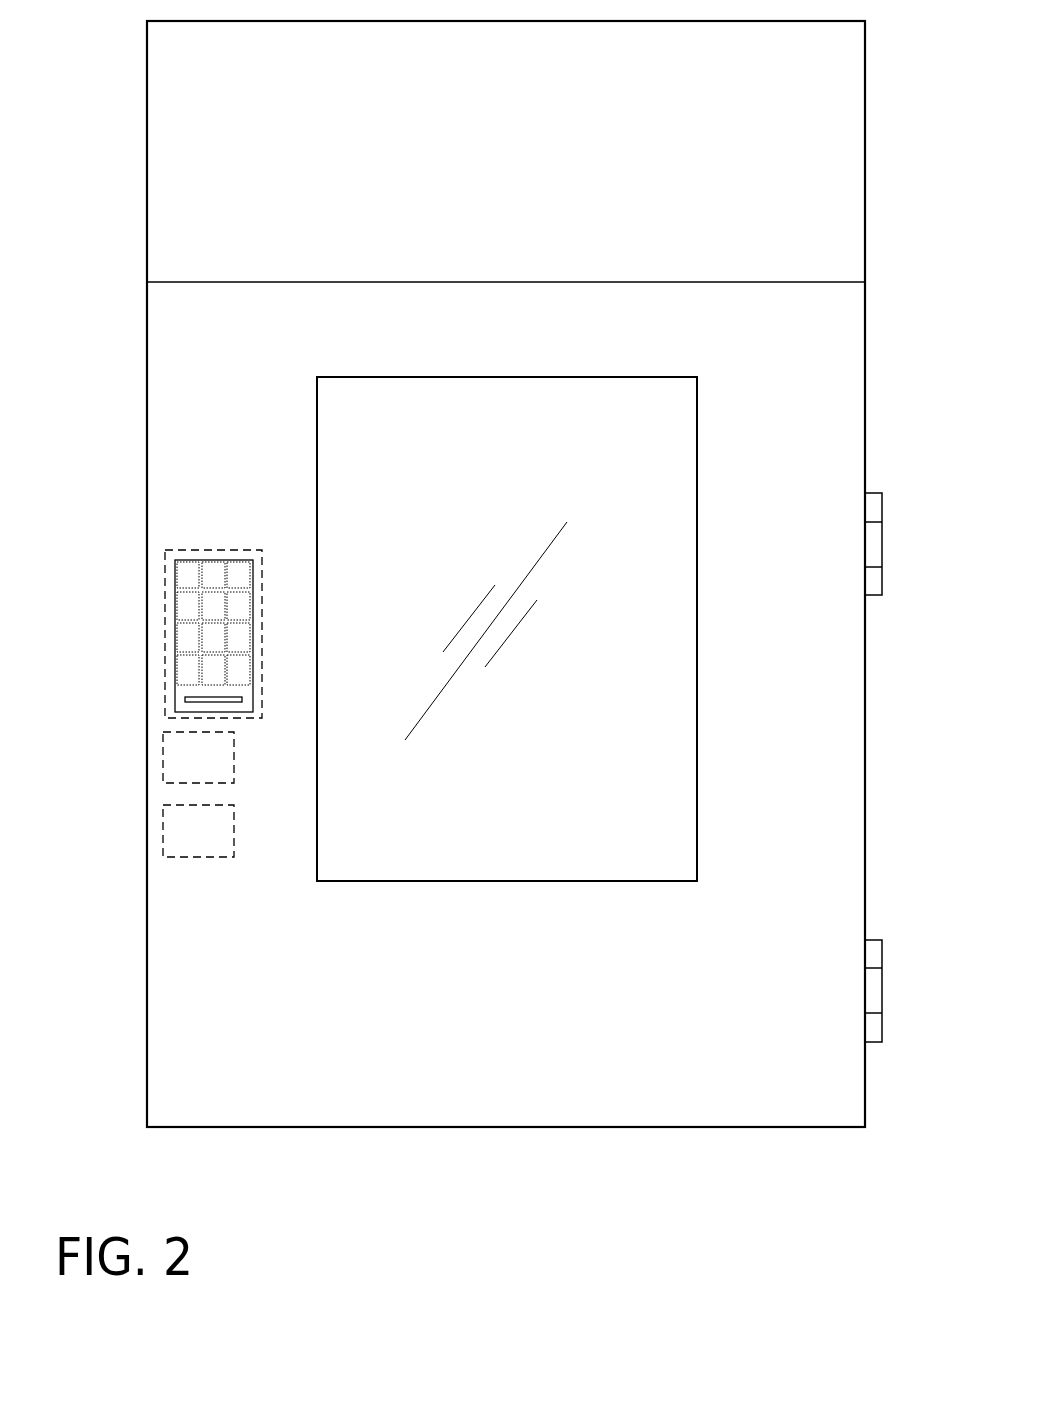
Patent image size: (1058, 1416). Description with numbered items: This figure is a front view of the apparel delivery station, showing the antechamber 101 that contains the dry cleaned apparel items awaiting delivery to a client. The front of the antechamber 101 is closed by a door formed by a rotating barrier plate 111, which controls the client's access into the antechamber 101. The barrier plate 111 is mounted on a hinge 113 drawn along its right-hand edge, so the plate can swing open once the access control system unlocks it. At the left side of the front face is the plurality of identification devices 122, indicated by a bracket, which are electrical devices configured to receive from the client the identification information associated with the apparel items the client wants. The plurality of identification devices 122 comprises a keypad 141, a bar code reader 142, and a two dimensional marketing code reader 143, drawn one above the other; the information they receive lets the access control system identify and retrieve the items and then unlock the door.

The antechamber 101 is at (875, 180).
The barrier plate 111 is at (787, 835).
The hinge 113 is at (875, 990).
The plurality of identification devices 122 is at (140, 535).
The keypad 141 is at (218, 615).
The bar code reader 142 is at (215, 772).
The two dimensional marketing code reader 143 is at (206, 845).